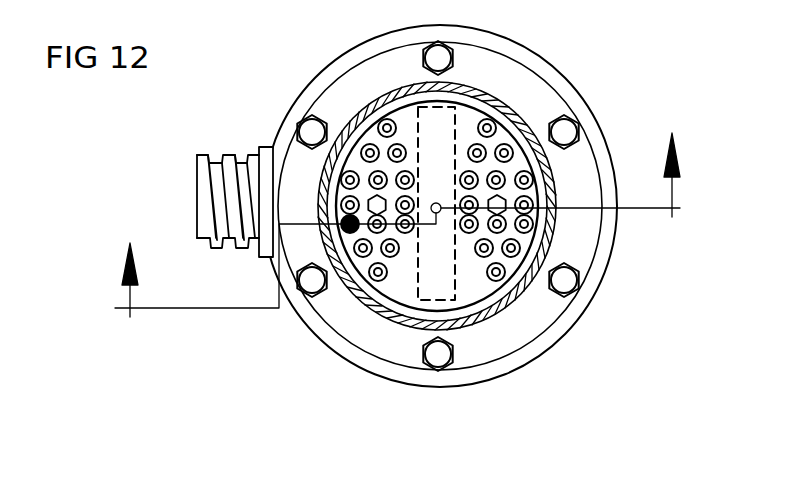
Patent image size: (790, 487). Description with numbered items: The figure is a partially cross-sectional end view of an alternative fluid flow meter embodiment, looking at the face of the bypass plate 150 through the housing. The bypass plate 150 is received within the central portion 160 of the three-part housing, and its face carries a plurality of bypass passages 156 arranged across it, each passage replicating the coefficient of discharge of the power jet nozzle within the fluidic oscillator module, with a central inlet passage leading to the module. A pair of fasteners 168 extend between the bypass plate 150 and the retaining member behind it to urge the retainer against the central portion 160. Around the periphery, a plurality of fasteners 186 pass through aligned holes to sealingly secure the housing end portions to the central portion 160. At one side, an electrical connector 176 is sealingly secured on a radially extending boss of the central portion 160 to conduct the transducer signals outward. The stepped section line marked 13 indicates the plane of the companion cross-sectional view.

The bypass plate 150 is at (472, 125).
The bypass passages 156 is at (524, 171).
The central portion 160 is at (588, 122).
The fasteners 168 is at (346, 226).
The electrical connector 176 is at (205, 157).
The fasteners 186 is at (568, 288).
The section line 13- 13 is at (397, 214).